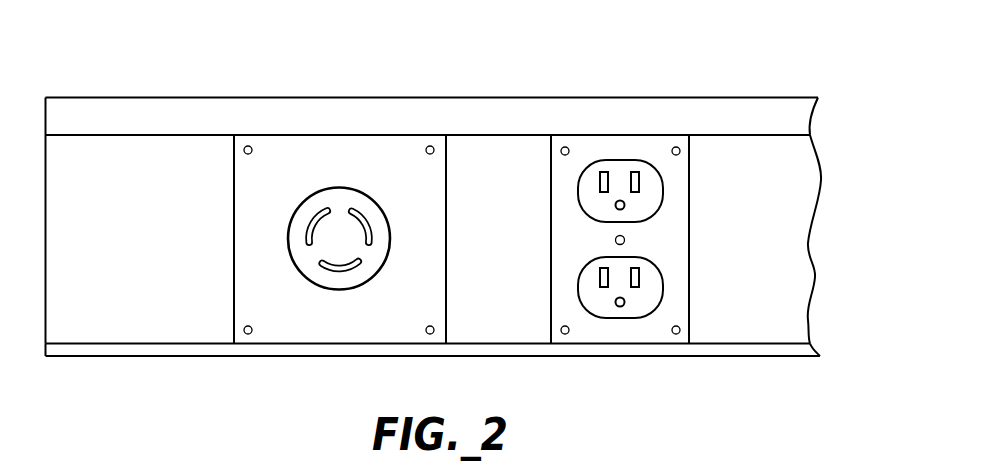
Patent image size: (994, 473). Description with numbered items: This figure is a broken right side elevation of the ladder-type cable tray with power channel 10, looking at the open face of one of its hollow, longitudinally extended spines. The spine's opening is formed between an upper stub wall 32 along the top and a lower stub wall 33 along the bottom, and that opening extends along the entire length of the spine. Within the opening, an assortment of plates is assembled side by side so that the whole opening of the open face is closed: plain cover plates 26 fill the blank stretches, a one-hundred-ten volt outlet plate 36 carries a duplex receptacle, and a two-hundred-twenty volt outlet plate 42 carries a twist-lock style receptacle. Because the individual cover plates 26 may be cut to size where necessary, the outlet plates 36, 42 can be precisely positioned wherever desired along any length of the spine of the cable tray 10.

The ladder-type cable tray with power channel 10 is at (768, 47).
The cover plate 26 is at (207, 312).
The upper stub wall 32 is at (165, 96).
The lower stub wall 33 is at (115, 348).
The 110 V outlet plate 36 is at (613, 143).
The 220 V outlet plate 42 is at (328, 143).